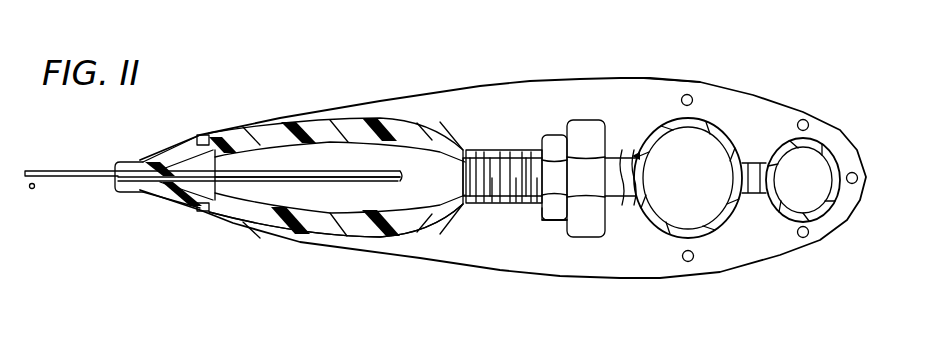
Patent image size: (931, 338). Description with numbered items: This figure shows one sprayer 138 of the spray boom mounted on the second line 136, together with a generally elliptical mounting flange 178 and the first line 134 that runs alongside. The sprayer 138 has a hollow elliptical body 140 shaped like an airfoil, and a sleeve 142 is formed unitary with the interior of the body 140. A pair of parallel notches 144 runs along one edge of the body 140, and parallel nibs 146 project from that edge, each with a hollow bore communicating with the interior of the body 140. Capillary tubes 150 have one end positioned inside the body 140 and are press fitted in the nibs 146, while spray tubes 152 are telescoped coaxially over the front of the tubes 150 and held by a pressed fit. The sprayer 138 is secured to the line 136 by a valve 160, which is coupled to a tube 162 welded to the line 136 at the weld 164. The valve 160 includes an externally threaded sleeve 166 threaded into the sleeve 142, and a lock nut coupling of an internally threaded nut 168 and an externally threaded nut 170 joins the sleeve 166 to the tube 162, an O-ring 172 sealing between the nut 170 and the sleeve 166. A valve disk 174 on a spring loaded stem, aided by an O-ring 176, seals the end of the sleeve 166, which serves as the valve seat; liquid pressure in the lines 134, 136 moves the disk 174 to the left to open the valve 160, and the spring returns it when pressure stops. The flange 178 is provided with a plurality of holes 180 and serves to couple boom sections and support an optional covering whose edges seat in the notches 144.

The first line 134 is at (792, 222).
The second line 136 is at (704, 122).
The sprayer 138 is at (373, 118).
The hollow elliptical body 140 is at (413, 220).
The sleeve 142 is at (487, 150).
The notches 144 is at (196, 136).
The nibs 146 is at (140, 190).
The capillary tubes 150 is at (345, 174).
The spray tubes 152 is at (90, 140).
The valve 160 is at (553, 228).
The tube 162 is at (612, 158).
The weld 164 is at (640, 157).
The externally threaded sleeve 166 is at (523, 160).
The internally threaded nut 168 is at (588, 120).
The externally threaded nut 170 is at (558, 208).
The O-ring 172 is at (543, 212).
The valve disk 174 is at (462, 172).
The O-ring 176 is at (463, 138).
The mounting flanges 178 is at (662, 58).
The holes 180 is at (692, 96).